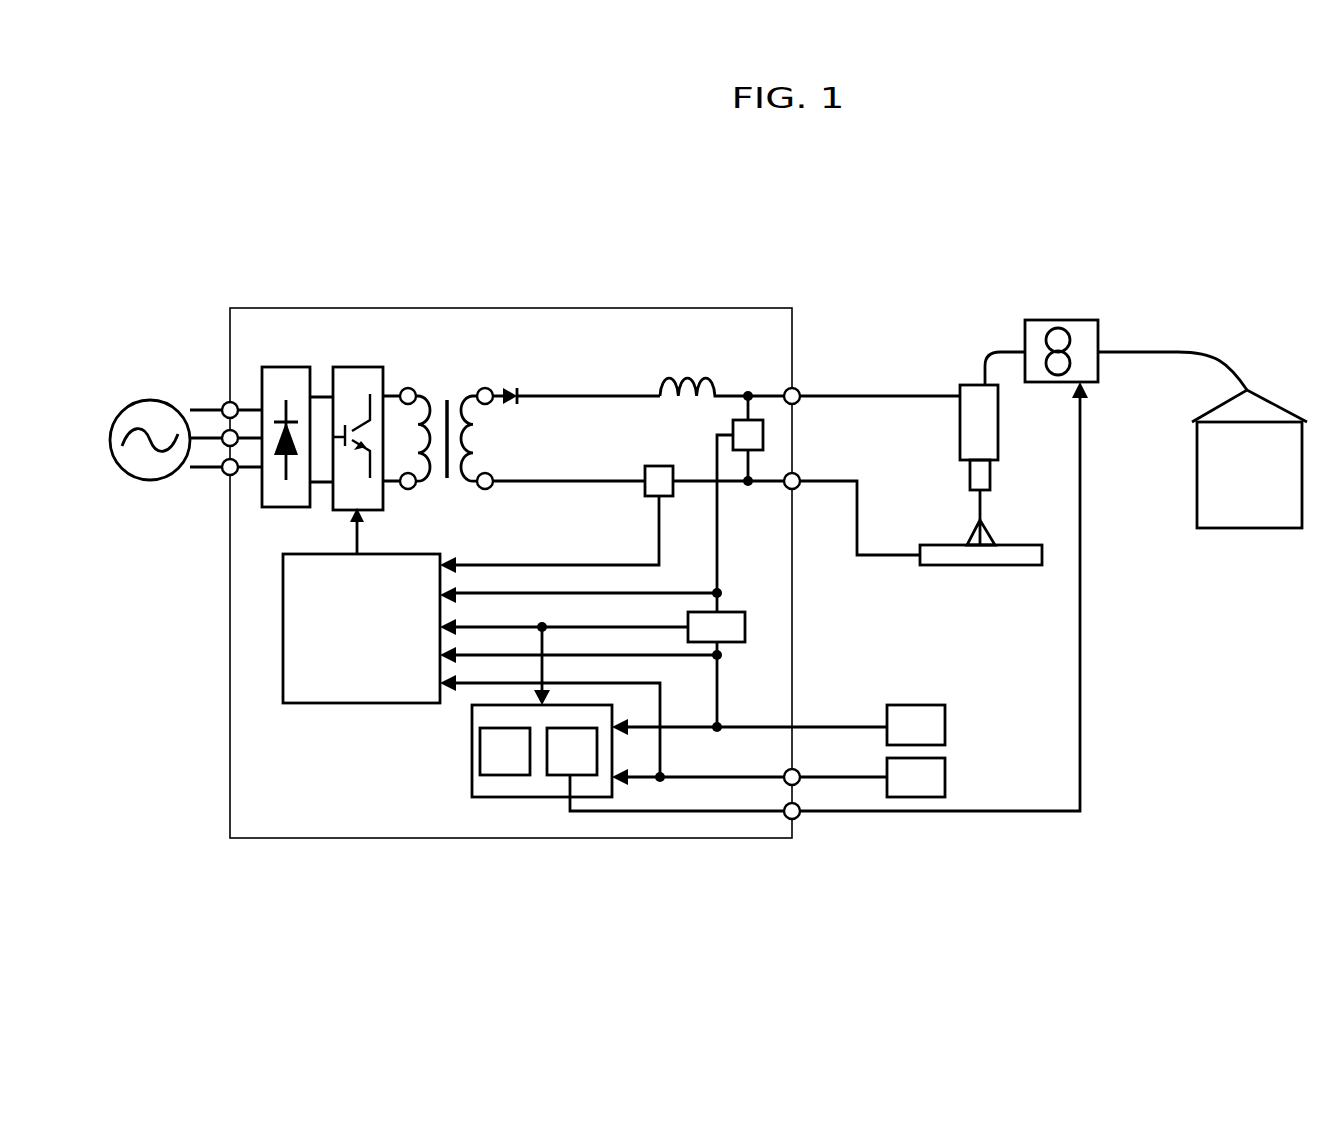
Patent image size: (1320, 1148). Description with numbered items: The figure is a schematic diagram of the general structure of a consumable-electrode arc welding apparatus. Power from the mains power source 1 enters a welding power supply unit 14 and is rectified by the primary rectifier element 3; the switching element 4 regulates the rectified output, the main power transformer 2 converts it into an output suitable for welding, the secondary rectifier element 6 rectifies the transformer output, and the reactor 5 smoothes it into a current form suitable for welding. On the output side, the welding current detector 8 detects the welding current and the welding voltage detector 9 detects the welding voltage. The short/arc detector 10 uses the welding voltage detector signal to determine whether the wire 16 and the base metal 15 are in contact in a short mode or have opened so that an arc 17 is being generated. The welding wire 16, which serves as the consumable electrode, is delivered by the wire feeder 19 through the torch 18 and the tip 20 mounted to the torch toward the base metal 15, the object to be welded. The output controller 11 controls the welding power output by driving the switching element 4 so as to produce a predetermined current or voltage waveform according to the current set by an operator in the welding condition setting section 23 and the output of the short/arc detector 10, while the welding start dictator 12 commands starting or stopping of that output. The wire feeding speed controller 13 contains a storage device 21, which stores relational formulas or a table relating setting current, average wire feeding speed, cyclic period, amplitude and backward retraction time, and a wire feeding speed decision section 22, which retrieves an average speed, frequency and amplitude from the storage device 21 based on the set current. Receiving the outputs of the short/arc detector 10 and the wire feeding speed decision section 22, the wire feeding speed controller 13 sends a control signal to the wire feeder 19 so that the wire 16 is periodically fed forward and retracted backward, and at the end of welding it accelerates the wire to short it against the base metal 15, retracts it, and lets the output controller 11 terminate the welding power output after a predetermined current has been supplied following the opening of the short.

The mains power source 1 is at (137, 403).
The main power transformer 2 is at (440, 378).
The primary rectifier element 3 is at (275, 367).
The switching element 4 is at (352, 367).
The reactor 5 is at (692, 372).
The secondary rectifier element 6 is at (495, 382).
The welding current detector 8 is at (655, 466).
The welding voltage detector 9 is at (757, 420).
The short/arc detector 10 is at (747, 627).
The output controller 11 is at (357, 705).
The welding start dictator 12 is at (923, 800).
The wire feeding speed controller 13 is at (470, 768).
The welding power supply 14 is at (230, 710).
The base metal 15 is at (988, 565).
The wire 16 is at (973, 507).
The arc 17 is at (970, 538).
The torch 18 is at (960, 432).
The wire feeder 19 is at (1048, 320).
The tip 20 is at (970, 471).
The storage device 21 is at (498, 777).
The wire feeding speed decision section 22 is at (558, 777).
The welding condition setting section 23 is at (947, 733).